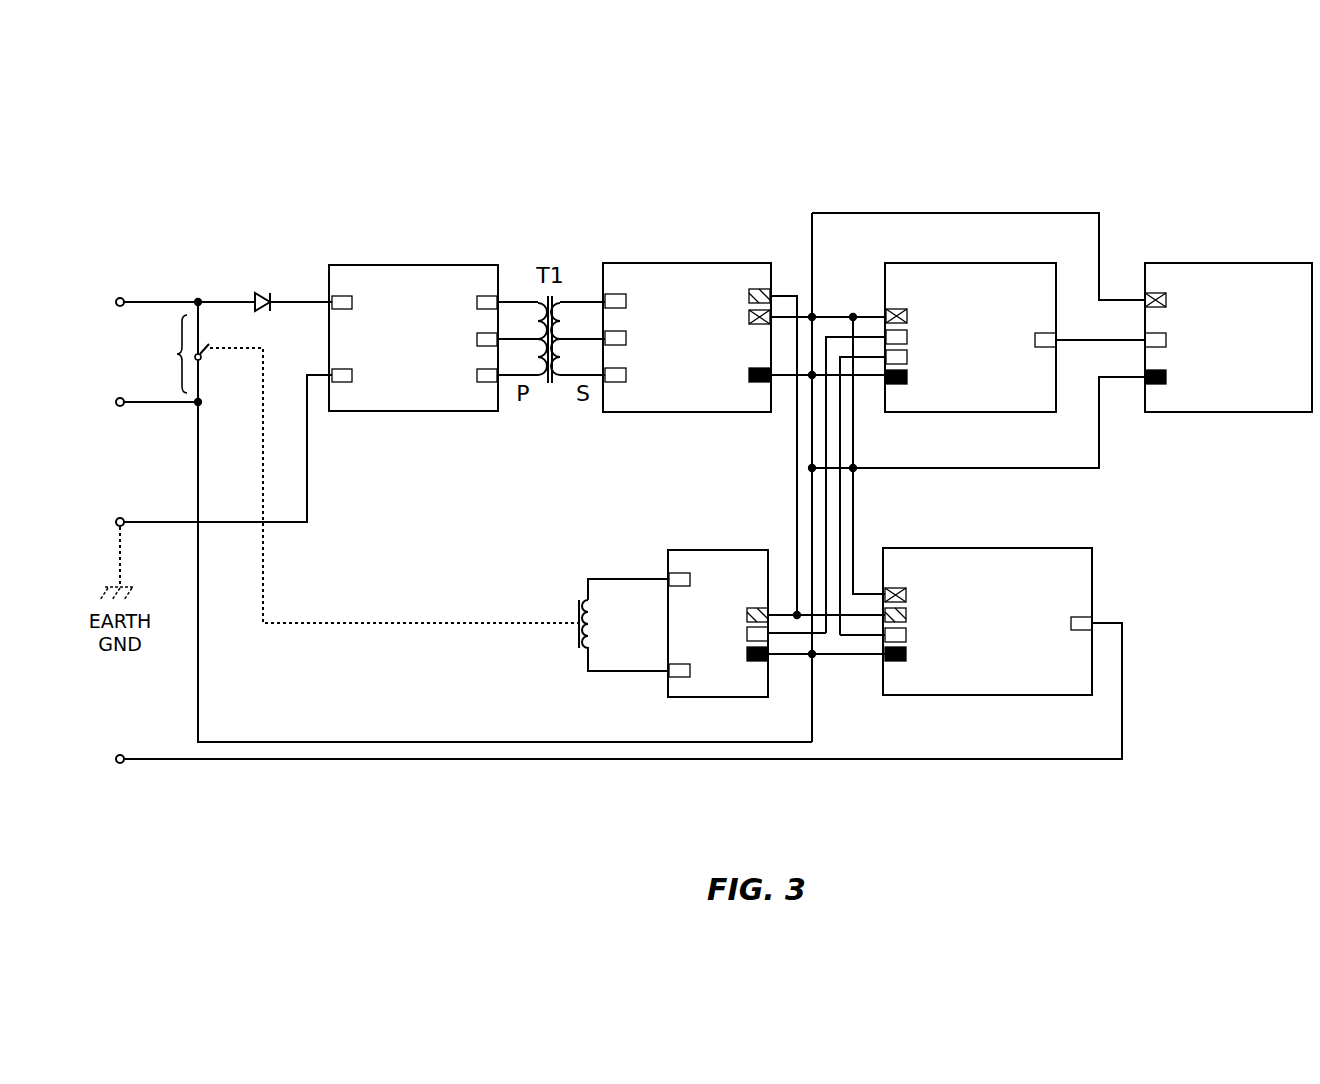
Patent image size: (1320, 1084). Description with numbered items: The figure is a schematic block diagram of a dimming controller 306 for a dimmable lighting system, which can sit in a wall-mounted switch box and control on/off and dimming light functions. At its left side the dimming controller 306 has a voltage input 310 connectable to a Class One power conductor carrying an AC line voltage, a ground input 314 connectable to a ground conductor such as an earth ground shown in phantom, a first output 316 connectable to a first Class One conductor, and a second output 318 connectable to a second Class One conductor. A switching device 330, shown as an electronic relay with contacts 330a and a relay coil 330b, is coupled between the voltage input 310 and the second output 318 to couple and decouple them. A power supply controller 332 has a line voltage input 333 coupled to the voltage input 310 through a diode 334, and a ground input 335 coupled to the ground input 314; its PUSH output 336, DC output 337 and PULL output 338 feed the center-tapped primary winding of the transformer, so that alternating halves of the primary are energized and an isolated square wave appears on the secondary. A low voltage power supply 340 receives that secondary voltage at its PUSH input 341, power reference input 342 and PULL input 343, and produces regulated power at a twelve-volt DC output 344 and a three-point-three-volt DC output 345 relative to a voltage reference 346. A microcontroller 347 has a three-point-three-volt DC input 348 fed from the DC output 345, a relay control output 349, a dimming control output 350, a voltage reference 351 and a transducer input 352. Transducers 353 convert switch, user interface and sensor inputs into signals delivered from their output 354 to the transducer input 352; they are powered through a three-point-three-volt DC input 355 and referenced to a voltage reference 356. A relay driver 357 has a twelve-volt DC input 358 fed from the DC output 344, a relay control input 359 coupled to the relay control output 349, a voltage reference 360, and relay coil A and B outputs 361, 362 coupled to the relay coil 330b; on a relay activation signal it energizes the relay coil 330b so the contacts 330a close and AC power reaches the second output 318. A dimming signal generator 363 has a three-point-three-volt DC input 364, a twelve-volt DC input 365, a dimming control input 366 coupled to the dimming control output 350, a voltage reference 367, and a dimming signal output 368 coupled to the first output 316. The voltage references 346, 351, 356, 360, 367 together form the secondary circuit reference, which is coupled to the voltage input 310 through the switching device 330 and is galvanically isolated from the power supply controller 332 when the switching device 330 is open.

The dimming controller 306 is at (303, 150).
The voltage input 310 is at (120, 297).
The ground input 314 is at (120, 516).
The first output 316 is at (120, 753).
The second output 318 is at (120, 407).
The switching device 330 is at (396, 493).
The contacts 330a is at (209, 346).
The relay coil 330b is at (580, 600).
The power supply controller 332 is at (397, 264).
The line voltage input 333 is at (344, 296).
The diode 334 is at (263, 292).
The ground input 335 is at (344, 369).
The PUSH output 336 is at (476, 302).
The DC output 337 is at (476, 339).
The PULL output 338 is at (476, 376).
The low voltage power supply 340 is at (690, 262).
The PUSH input 341 is at (627, 302).
The power reference input 342 is at (627, 339).
The PULL input 343 is at (627, 376).
The 12-volt DC output 344 is at (756, 289).
The 3.3-volt DC output 345 is at (756, 324).
The voltage reference 346 is at (756, 382).
The microcontroller 347 is at (1028, 262).
The 3.3-volt DC input 348 is at (899, 309).
The relay control output 349 is at (908, 337).
The dimming control output 350 is at (908, 356).
The voltage reference 351 is at (899, 384).
The transducer input 352 is at (1045, 333).
The transducers 353 is at (1237, 262).
The output 354 is at (1167, 340).
The 3.3-volt DC input 355 is at (1167, 300).
The voltage reference 356 is at (1167, 377).
The relay driver 357 is at (748, 549).
The 12-volt DC input 358 is at (757, 608).
The relay control input 359 is at (745, 632).
The voltage reference 360 is at (757, 662).
The relay coil A output 361 is at (683, 573).
The relay coil B output 362 is at (675, 664).
The dimming signal generator 363 is at (1000, 547).
The 3.3-volt DC input 364 is at (898, 588).
The 12-volt DC input 365 is at (908, 612).
The dimming control input 366 is at (908, 635).
The voltage reference 367 is at (898, 662).
The dimming signal output 368 is at (1077, 617).